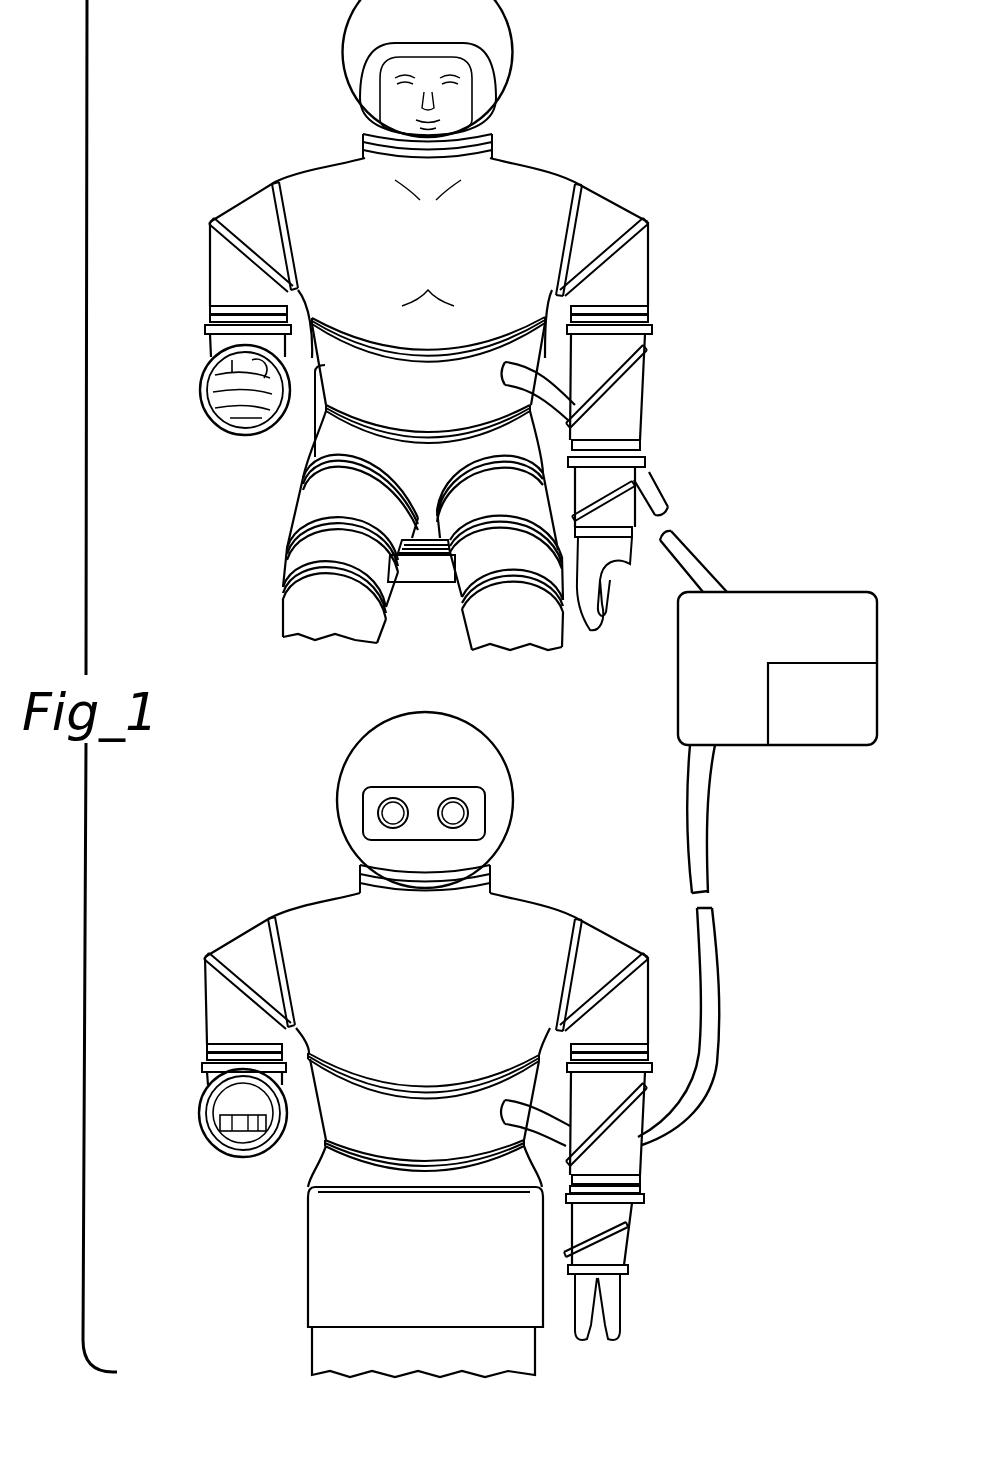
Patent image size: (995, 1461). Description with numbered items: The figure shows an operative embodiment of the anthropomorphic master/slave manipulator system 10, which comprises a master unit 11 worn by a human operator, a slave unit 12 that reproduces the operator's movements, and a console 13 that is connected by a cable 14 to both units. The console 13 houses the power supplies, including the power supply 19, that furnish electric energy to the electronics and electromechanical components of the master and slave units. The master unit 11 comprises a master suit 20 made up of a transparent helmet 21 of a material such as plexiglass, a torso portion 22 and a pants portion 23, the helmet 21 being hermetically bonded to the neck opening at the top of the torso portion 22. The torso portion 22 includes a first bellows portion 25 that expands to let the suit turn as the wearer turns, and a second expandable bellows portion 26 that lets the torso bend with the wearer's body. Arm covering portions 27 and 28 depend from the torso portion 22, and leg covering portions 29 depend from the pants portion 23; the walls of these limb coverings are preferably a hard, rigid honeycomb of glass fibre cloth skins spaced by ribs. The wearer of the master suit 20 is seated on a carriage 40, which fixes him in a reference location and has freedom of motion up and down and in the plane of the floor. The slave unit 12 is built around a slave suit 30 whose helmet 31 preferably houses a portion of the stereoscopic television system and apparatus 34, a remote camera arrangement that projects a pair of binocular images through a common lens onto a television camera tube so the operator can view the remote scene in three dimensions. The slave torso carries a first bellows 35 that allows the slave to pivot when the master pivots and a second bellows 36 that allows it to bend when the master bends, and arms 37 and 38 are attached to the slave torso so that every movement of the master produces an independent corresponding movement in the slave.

The anthropomorphic master/slave manipulator system 10 is at (682, 334).
The master unit 11 is at (545, 164).
The slave unit 12 is at (186, 948).
The console 13 is at (763, 657).
The cable 14 is at (692, 782).
The power supply 19 is at (811, 721).
The master suit 20 is at (318, 164).
The transparent helmet 21 is at (520, 66).
The torso portion 22 is at (332, 377).
The pants portion 23 is at (298, 572).
The first bellows portion 25 is at (437, 356).
The second expandable bellows portion 26 is at (437, 426).
The arm covering portion 27 is at (228, 283).
The arm covering portion 28 is at (637, 278).
The leg covering portions 29 is at (307, 504).
The slave suit 30 is at (335, 897).
The helmet 31 is at (494, 756).
The stereoscopic television system and apparatus 34 is at (480, 822).
The first bellows 35 is at (426, 1088).
The second bellows 36 is at (426, 1159).
The arm 37 is at (212, 1012).
The arm 38 is at (636, 1020).
The carriage 40 is at (422, 576).